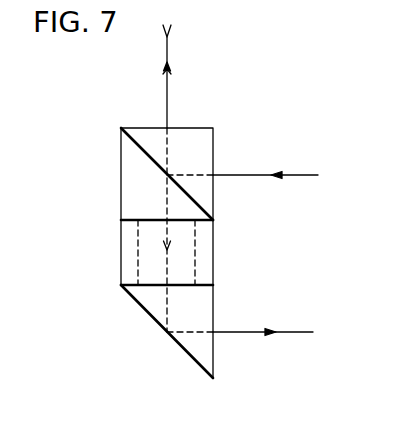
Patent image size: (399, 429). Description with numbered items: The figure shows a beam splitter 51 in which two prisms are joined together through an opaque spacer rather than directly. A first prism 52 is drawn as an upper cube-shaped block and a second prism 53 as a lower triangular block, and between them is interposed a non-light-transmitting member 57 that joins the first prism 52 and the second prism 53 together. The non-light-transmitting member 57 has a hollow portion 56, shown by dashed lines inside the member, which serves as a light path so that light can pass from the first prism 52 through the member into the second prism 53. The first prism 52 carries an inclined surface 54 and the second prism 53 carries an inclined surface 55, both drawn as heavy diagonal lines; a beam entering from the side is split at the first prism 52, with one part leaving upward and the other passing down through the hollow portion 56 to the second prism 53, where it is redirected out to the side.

The beam splitting prism assembly 51 is at (111, 244).
The first prism 52 is at (192, 135).
The second prism 53 is at (145, 297).
The first reflecting surface 54 is at (138, 145).
The second reflecting surface 55 is at (158, 325).
The hollow portion 56 is at (185, 252).
The non-light-transmitting member 57 is at (208, 233).